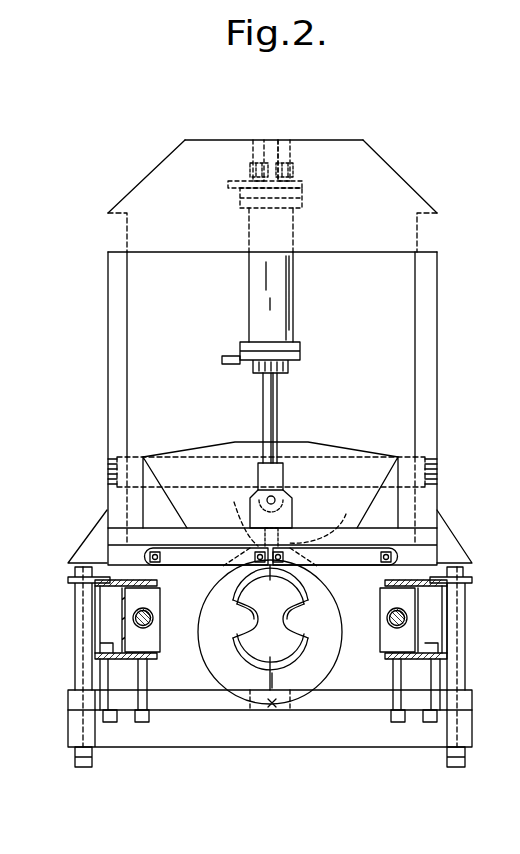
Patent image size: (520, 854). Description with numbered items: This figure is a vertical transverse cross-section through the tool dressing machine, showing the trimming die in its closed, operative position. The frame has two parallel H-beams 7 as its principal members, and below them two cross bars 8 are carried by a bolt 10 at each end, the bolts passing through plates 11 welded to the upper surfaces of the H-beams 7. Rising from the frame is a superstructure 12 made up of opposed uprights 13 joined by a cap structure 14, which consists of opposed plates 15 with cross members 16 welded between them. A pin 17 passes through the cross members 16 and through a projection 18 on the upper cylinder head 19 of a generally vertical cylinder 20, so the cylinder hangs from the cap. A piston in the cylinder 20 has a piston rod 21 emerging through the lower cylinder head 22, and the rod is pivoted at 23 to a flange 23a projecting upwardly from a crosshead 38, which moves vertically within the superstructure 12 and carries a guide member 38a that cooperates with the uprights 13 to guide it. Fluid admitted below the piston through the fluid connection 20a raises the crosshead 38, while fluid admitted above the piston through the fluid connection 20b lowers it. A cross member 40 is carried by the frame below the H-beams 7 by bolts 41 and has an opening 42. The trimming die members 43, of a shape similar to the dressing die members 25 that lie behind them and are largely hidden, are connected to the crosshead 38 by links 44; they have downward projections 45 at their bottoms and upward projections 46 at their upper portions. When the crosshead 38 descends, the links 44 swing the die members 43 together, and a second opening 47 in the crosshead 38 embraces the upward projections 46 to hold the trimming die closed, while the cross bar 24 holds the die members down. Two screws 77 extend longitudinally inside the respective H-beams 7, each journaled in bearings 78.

The H-beam 7 is at (125, 605).
The cross bar 8 is at (253, 743).
The bolt 10 is at (88, 767).
The plate 11 is at (68, 578).
The superstructure 12 is at (437, 355).
The upright 13 is at (113, 278).
The cap structure 14 is at (405, 182).
The plate 15 is at (338, 150).
The cross member 16 is at (280, 140).
The pin 17 is at (294, 169).
The projection 18 is at (282, 162).
The upper cylinder head 19 is at (303, 200).
The cylinder 20 is at (290, 283).
The fluid connection 20a is at (222, 360).
The fluid connection 20b is at (229, 190).
The piston rod 21 is at (277, 408).
The lower cylinder head 22 is at (300, 349).
The pivot 23 is at (276, 503).
The flange 23a is at (285, 488).
The cross bar 24 is at (323, 449).
The die member 25 is at (284, 652).
The crosshead 38 is at (216, 531).
The guide member 38a is at (190, 458).
The cross member 40 is at (338, 737).
The bolt 41 is at (142, 678).
The opening 42 is at (252, 700).
The trimming die member 43 is at (290, 598).
The link 44 is at (198, 560).
The downward projection 45 is at (272, 705).
The upward projection 46 is at (351, 509).
The opening 47 is at (234, 502).
The screw 77 is at (150, 620).
The bearing 78 is at (154, 640).